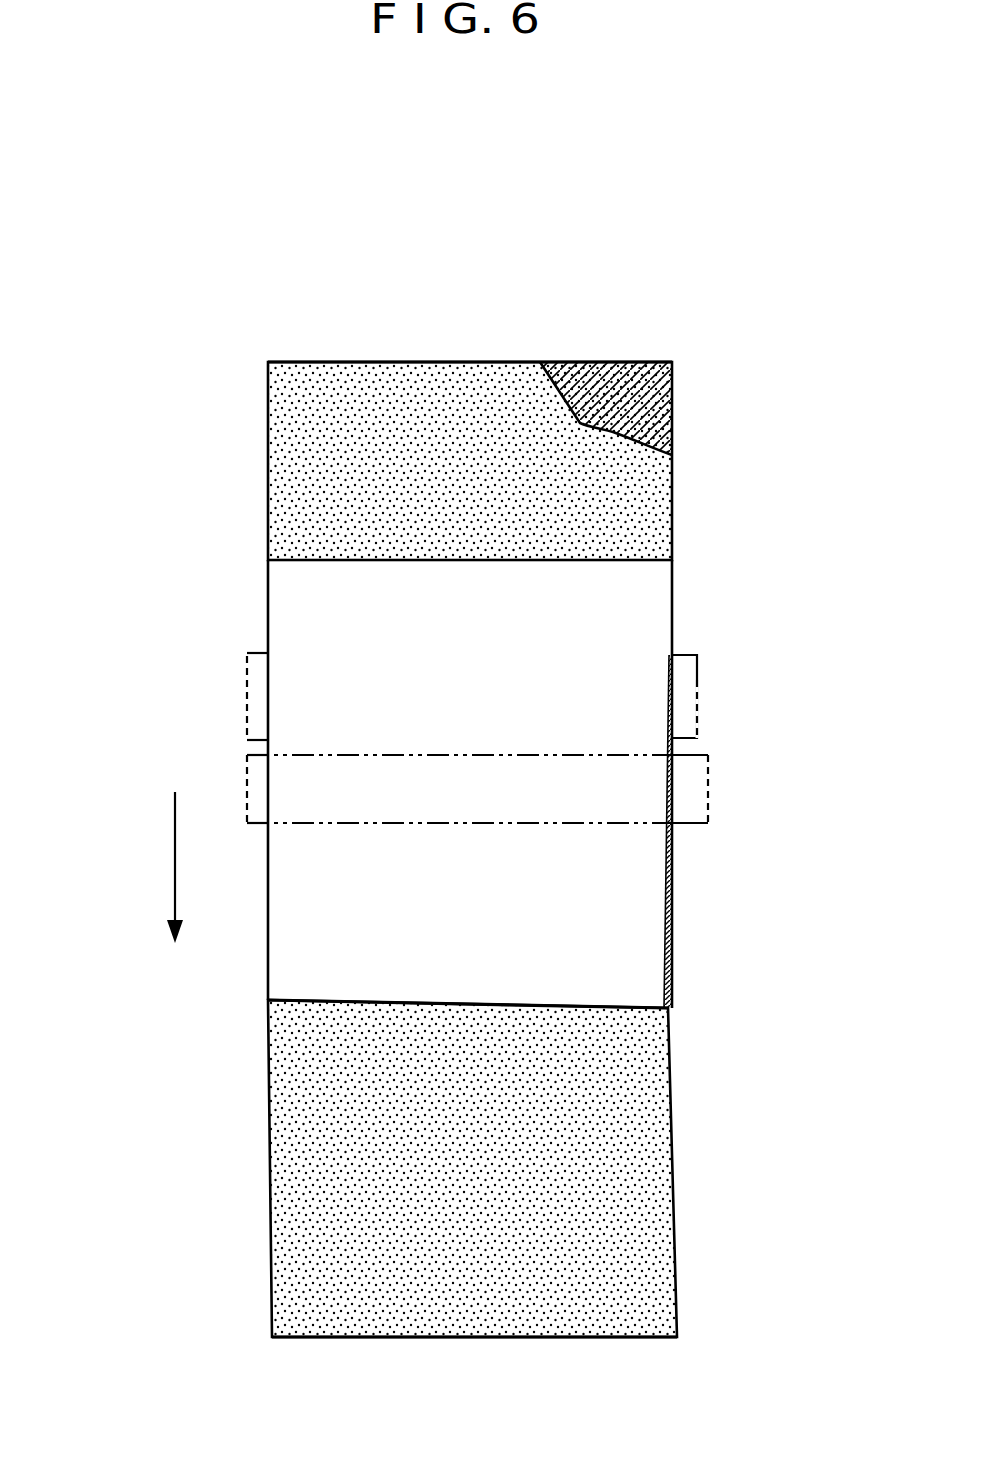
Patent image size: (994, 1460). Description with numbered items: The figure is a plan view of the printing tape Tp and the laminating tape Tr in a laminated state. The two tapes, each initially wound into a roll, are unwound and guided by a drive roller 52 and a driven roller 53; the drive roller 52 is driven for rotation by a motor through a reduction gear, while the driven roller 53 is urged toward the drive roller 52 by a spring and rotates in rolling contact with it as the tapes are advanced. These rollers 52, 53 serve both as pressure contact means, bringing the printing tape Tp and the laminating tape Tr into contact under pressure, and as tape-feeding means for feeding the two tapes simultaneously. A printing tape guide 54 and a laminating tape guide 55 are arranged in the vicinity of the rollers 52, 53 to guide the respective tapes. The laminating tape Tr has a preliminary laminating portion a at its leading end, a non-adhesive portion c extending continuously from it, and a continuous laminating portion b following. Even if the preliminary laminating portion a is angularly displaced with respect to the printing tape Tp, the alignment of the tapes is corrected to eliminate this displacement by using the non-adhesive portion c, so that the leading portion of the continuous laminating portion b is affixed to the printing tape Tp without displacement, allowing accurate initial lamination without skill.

The laminating tape Tr is at (370, 388).
The printing tape Tp is at (598, 362).
The preliminary laminating portion a is at (297, 1203).
The continuous laminating portion b is at (288, 473).
The non-adhesive portion c is at (285, 962).
The drive roller 52 is at (708, 780).
The driven roller 53 is at (573, 786).
The printing tape guide 54 is at (247, 682).
The laminating tape guide 55 is at (697, 678).